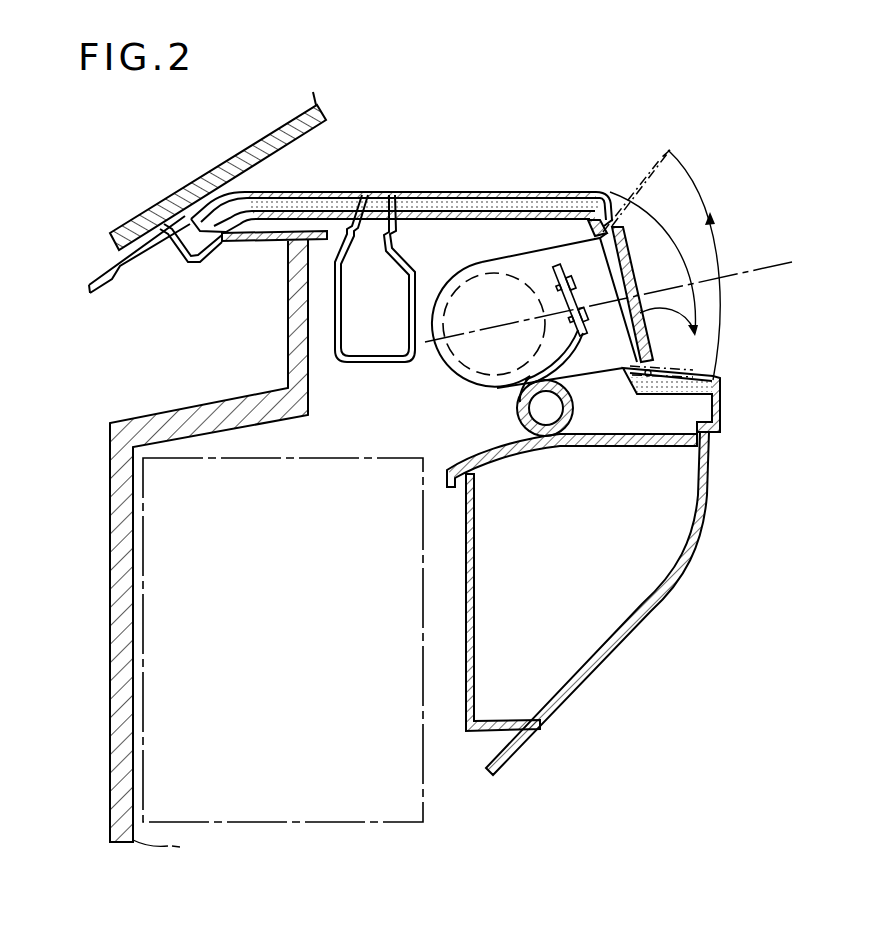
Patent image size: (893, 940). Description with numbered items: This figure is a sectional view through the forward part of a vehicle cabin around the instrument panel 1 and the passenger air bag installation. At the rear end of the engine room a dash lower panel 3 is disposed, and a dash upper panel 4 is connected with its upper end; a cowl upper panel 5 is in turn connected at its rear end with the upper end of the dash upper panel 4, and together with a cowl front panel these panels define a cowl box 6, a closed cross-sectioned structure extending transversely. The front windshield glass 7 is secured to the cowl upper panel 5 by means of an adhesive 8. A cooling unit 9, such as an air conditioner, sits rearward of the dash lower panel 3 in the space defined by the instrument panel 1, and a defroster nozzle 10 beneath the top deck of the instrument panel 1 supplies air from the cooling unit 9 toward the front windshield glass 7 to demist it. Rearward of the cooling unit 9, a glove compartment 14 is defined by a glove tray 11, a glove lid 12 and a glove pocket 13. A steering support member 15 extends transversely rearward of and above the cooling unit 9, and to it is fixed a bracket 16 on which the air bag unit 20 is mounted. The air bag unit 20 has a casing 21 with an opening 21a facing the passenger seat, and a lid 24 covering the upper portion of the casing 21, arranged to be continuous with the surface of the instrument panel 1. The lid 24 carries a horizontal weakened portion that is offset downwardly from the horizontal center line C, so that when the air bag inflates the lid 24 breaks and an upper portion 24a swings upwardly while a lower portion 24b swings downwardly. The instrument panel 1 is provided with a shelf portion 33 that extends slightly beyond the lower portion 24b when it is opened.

The instrument panel 1 is at (450, 193).
The dash lower panel 3 is at (130, 683).
The dash upper panel 4 is at (291, 386).
The cowl upper panel 5 is at (243, 241).
The cowl box 6 is at (178, 341).
The front windshield glass 7 is at (178, 200).
The adhesive 8 is at (143, 232).
The cooling unit 9 is at (146, 552).
The defroster nozzle 10 is at (408, 250).
The glove tray 11 is at (475, 599).
The glove lid 12 is at (652, 622).
The glove pocket 13 is at (580, 552).
The glove compartment 14 is at (466, 676).
The steering support member 15 is at (574, 414).
The bracket 16 is at (517, 382).
The air bag unit 20 is at (508, 247).
The casing 21 is at (559, 240).
The opening 21a is at (598, 198).
The lid 24 is at (626, 258).
The upper portion 24a is at (668, 172).
The lower portion 24b is at (695, 372).
The shelf portion 33 is at (664, 419).
The horizontal center line C is at (780, 268).